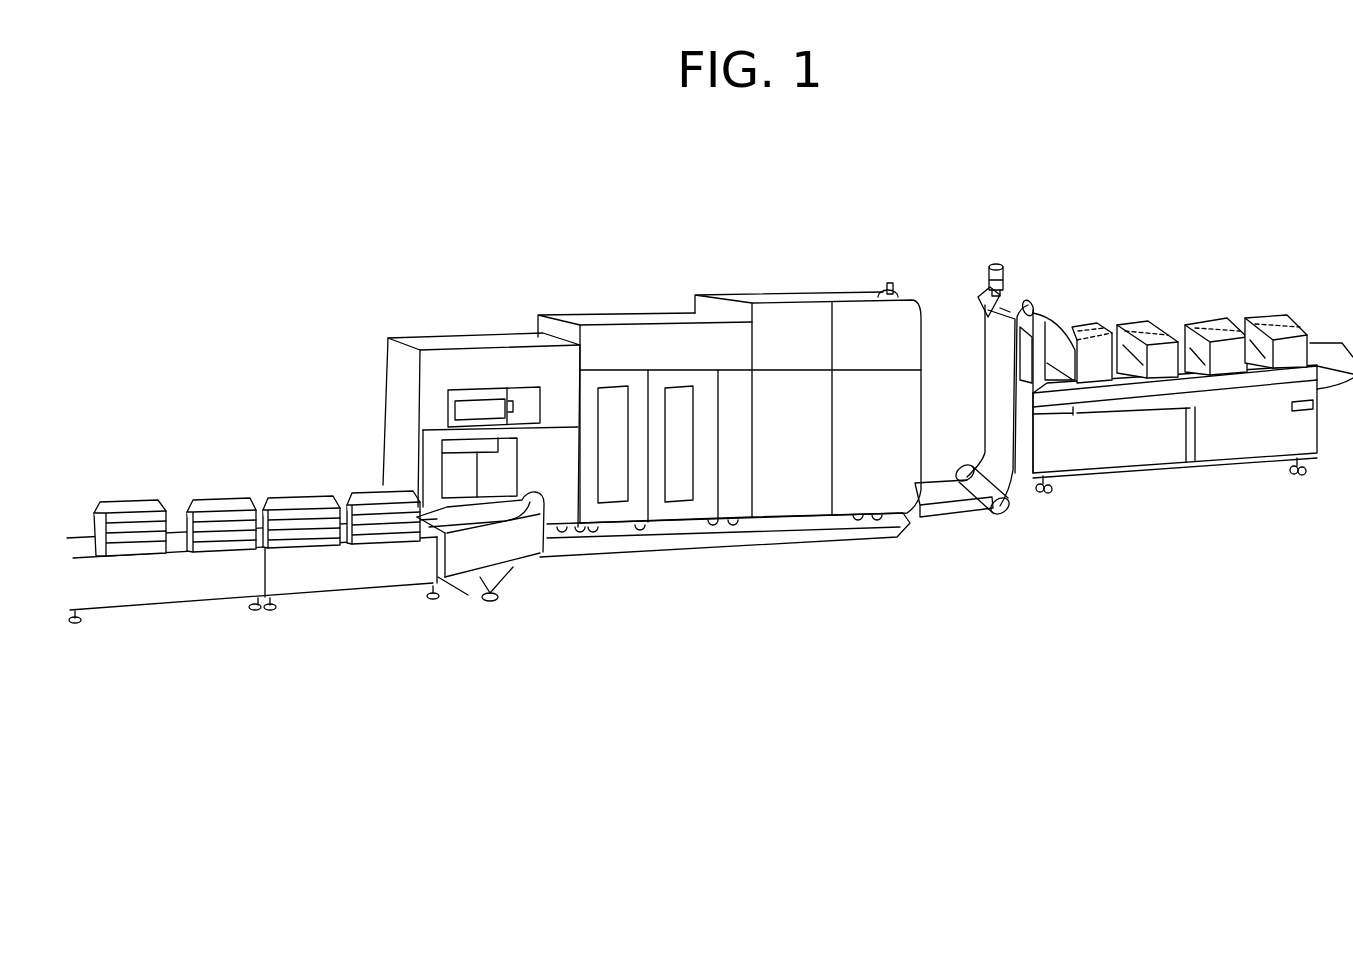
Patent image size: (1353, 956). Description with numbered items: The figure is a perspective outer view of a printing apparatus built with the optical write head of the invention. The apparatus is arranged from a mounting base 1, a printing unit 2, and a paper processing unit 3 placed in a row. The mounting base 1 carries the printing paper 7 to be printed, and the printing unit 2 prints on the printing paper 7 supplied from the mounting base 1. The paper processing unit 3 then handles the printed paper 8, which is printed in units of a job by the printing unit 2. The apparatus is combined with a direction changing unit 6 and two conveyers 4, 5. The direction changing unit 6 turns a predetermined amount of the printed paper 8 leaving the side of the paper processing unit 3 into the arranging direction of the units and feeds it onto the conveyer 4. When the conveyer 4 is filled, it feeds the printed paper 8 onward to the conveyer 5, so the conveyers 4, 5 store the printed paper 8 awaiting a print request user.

The mounting base 1 is at (1225, 442).
The printing unit 2 is at (710, 294).
The paper processing unit 3 is at (437, 335).
The conveyer 4 is at (345, 577).
The conveyer 5 is at (133, 590).
The direction changing unit 6 is at (518, 553).
The printing paper 7 is at (1205, 318).
The printed paper 8 is at (134, 500).